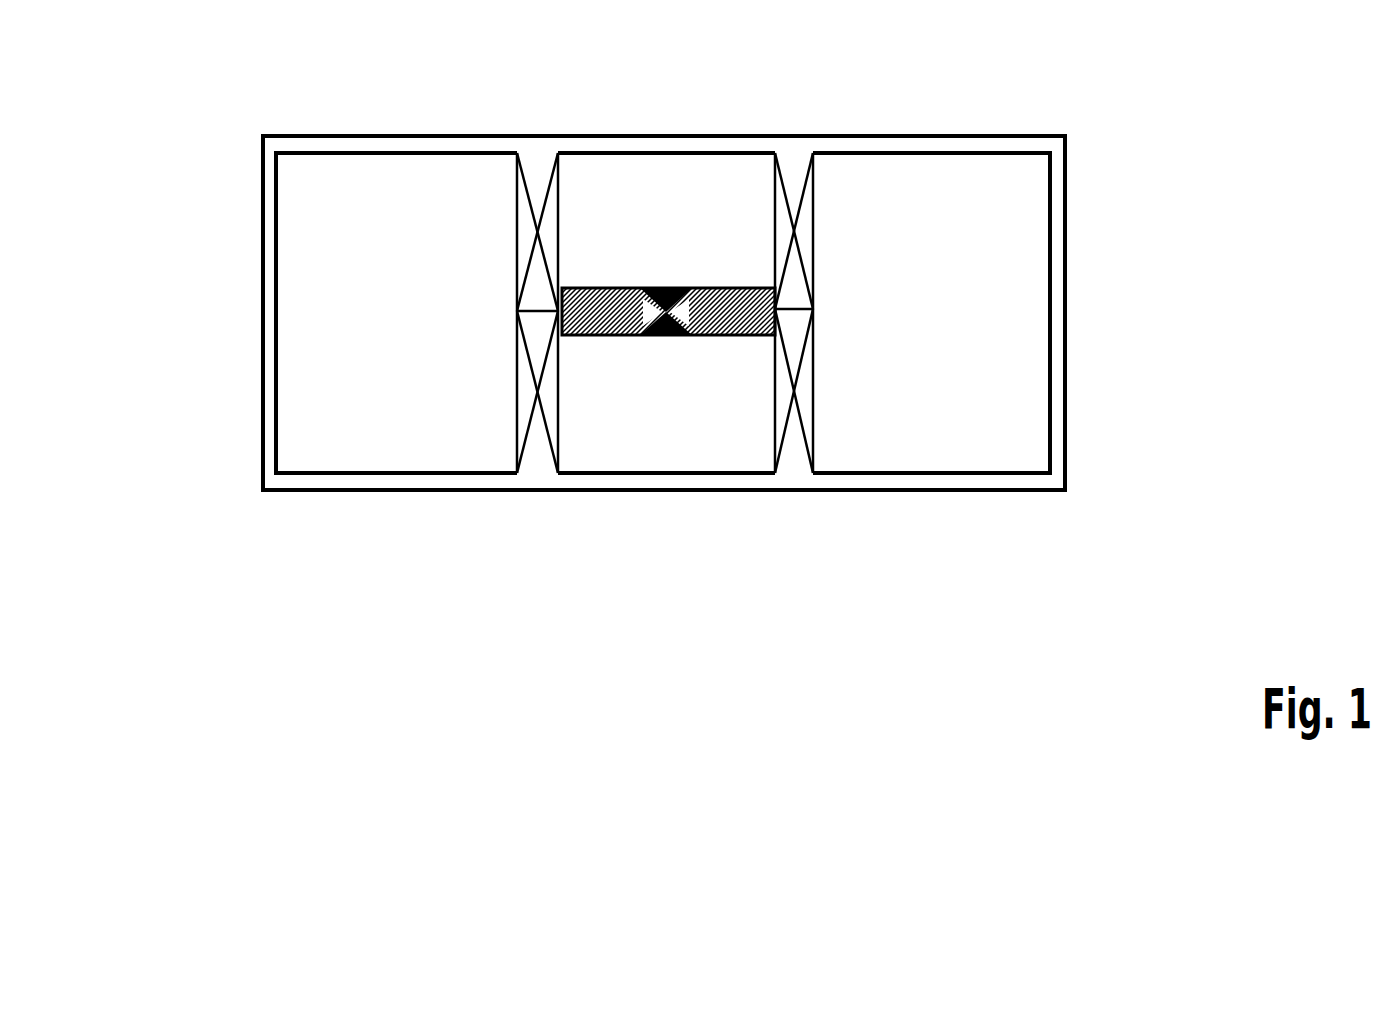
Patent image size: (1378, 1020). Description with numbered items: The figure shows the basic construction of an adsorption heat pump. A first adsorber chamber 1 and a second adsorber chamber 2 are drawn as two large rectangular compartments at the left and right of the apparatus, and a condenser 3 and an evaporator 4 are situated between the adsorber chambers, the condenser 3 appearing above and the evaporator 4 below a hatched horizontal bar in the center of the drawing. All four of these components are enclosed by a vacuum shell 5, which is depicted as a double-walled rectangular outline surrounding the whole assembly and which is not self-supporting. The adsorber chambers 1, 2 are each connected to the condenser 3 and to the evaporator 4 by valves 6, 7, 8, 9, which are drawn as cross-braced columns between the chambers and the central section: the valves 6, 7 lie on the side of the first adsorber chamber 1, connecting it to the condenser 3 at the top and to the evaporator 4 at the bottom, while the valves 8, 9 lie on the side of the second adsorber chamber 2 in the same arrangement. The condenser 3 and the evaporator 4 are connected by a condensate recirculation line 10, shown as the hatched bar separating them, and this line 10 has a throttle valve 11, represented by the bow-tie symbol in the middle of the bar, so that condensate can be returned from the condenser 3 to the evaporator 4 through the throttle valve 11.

The first adsorber chamber 1 is at (396, 313).
The second adsorber chamber 2 is at (931, 313).
The condenser 3 is at (666, 205).
The evaporator 4 is at (666, 423).
The vacuum shell 5 is at (243, 266).
The valve 6 is at (514, 154).
The valve 7 is at (518, 470).
The valve 8 is at (822, 152).
The valve 9 is at (792, 474).
The condensate recirculation line 10 is at (724, 326).
The throttle valve 11 is at (648, 342).